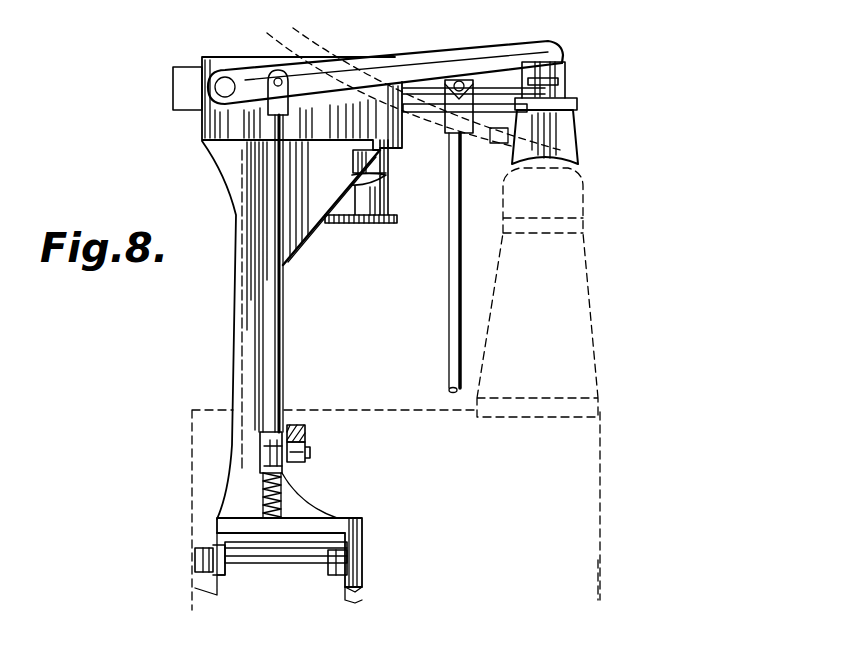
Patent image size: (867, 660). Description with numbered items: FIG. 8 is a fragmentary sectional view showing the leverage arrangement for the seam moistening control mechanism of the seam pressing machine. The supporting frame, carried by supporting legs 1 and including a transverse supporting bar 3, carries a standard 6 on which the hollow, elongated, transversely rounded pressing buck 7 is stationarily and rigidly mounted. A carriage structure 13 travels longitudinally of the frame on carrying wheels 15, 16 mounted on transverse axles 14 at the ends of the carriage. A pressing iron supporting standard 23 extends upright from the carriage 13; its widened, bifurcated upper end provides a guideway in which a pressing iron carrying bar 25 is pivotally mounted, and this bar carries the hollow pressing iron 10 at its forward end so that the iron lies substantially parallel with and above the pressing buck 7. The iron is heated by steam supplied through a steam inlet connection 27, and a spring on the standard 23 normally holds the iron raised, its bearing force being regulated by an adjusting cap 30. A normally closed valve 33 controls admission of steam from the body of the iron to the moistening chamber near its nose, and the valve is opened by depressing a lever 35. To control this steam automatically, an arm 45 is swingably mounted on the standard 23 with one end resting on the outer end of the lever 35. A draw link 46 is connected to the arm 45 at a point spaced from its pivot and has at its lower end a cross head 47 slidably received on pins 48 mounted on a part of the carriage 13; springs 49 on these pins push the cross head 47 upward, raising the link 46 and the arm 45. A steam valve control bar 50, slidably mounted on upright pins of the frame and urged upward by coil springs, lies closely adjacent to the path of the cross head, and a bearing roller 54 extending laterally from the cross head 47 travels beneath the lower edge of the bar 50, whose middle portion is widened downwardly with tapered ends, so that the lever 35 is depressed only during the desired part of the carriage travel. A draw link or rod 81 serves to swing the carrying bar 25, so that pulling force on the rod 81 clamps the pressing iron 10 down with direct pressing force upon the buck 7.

The supporting legs 1 is at (584, 560).
The transverse supporting bar 3 is at (584, 442).
The standard 6 is at (578, 313).
The pressing buck 7 is at (570, 206).
The pressing iron 10 is at (566, 142).
The carriage structure 13 is at (362, 526).
The axles 14 is at (280, 550).
The carrying wheel 15 is at (346, 561).
The carrying wheel 16 is at (197, 560).
The pressing iron supporting standard 23 is at (232, 180).
The pressing iron carrying bar 25 is at (190, 108).
The steam inlet connection 27 is at (498, 135).
The adjusting cap 30 is at (340, 223).
The valve 33 is at (572, 102).
The lever 35 is at (560, 72).
The arm 45 is at (452, 52).
The draw link 46 is at (284, 313).
The cross head 47 is at (274, 440).
The pins 48 is at (268, 455).
The springs 49 is at (282, 504).
The steam valve control bar 50 is at (306, 428).
The bearing roller 54 is at (300, 456).
The draw link or rod 81 is at (452, 268).